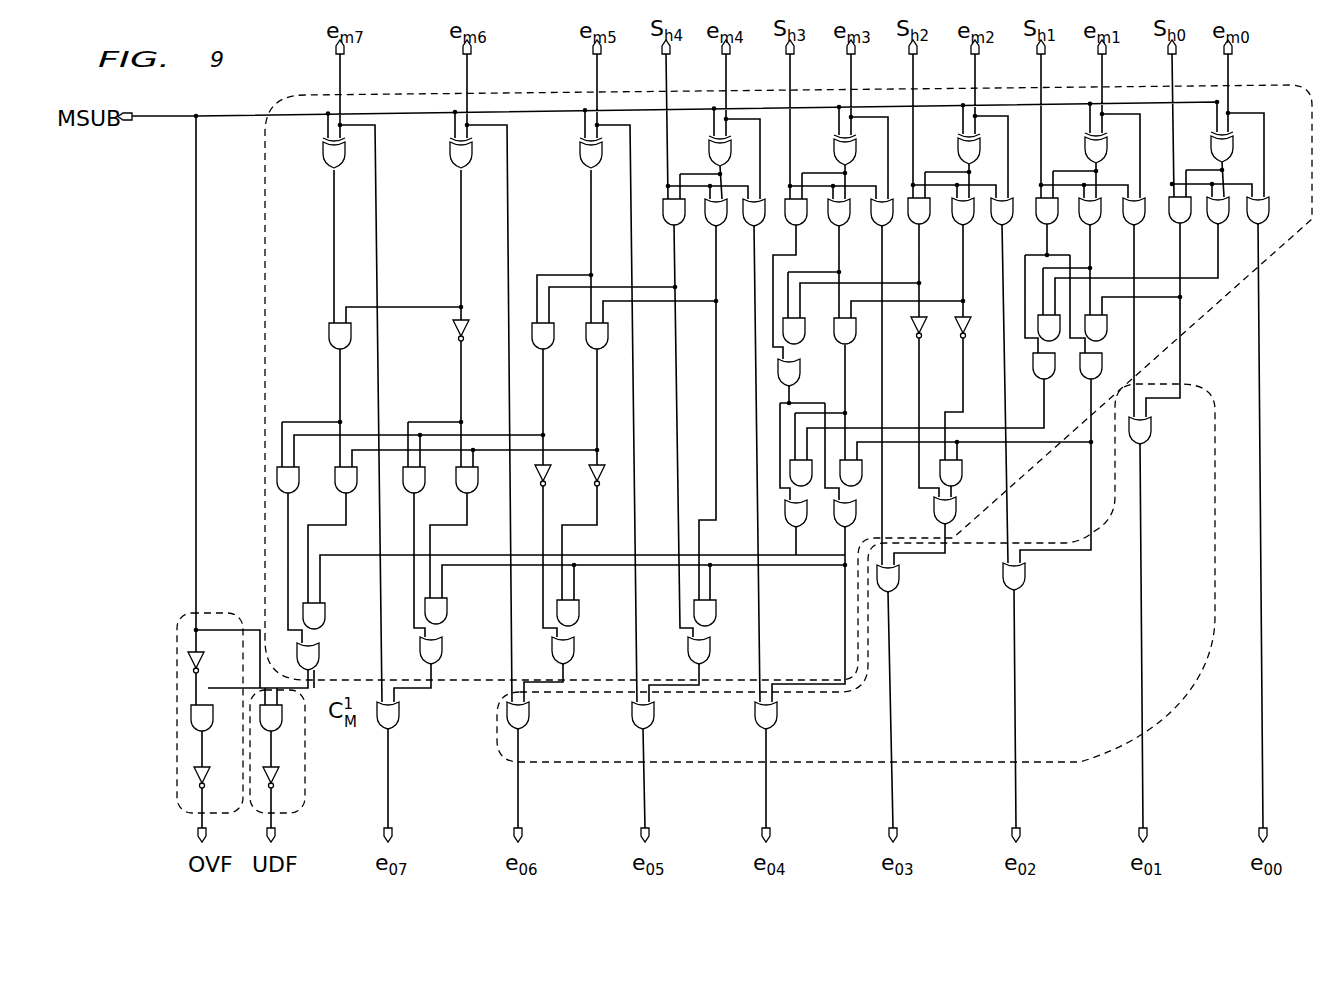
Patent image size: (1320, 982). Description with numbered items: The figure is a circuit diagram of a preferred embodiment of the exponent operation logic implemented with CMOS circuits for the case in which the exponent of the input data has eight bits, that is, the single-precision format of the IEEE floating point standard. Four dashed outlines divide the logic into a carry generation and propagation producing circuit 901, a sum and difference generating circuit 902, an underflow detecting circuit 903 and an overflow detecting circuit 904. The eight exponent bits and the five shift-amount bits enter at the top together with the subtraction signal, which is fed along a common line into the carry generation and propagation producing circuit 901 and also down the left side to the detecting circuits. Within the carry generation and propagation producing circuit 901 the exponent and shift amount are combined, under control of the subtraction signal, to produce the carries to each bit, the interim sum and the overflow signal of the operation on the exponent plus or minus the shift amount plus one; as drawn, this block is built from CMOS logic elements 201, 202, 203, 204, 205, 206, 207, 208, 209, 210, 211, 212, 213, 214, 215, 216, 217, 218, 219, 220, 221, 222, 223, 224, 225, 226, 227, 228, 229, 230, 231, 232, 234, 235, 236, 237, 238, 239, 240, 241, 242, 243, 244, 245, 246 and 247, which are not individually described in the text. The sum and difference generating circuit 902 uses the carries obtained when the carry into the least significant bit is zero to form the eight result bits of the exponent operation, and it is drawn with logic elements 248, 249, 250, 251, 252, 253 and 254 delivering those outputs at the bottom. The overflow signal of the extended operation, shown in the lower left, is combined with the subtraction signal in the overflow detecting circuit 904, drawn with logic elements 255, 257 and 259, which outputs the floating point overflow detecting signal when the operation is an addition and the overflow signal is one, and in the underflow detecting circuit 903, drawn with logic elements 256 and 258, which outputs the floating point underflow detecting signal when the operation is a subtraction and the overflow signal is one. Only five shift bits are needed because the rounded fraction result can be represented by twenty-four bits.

The exclusive OR gate 201 is at (1213, 146).
The exclusive OR gate 202 is at (1086, 146).
The exclusive OR gate 203 is at (960, 150).
The exclusive OR gate 204 is at (836, 150).
The exclusive OR gate 205 is at (710, 150).
The exclusive OR gate 206 is at (582, 180).
The exclusive OR gate 207 is at (452, 180).
The exclusive OR gate 208 is at (325, 180).
The gate 209 is at (1270, 204).
The gate 210 is at (1222, 227).
The gate 211 is at (1186, 226).
The gate 212 is at (1138, 227).
The gate 213 is at (1097, 226).
The gate 214 is at (1056, 226).
The gate 215 is at (1010, 226).
The gate 216 is at (971, 229).
The gate 217 is at (928, 226).
The gate 218 is at (888, 230).
The gate 219 is at (848, 226).
The gate 220 is at (804, 230).
The gate 221 is at (762, 226).
The gate 222 is at (722, 229).
The gate 223 is at (680, 226).
The inverter 224 is at (960, 334).
The inverter 225 is at (915, 329).
The gate 226 is at (834, 330).
The gate 227 is at (800, 380).
The gate 228 is at (608, 344).
The gate 229 is at (550, 349).
The inverter 230 is at (457, 341).
The gate 231 is at (338, 349).
The inverter 232 is at (602, 490).
The inverter 234 is at (551, 490).
The gate 235 is at (480, 494).
The gate 236 is at (422, 492).
The gate 237 is at (354, 494).
The gate 238 is at (299, 492).
The gate 239 is at (1054, 378).
The gate 240 is at (790, 524).
The gate 241 is at (319, 660).
The gate 242 is at (1103, 362).
The gate 243 is at (953, 511).
The gate 244 is at (840, 526).
The gate 245 is at (709, 658).
The gate 246 is at (574, 658).
The gate 247 is at (442, 660).
The gate 248 is at (1139, 442).
The gate 249 is at (1024, 582).
The gate 250 is at (898, 587).
The gate 251 is at (774, 726).
The gate 252 is at (655, 726).
The gate 253 is at (529, 726).
The gate 254 is at (396, 728).
The inverter 255 is at (204, 658).
The gate 256 is at (280, 728).
The gate 257 is at (214, 728).
The inverter 258 is at (281, 774).
The inverter 259 is at (194, 774).
The carry generation and propagation producing circuit 901 is at (265, 250).
The sum and difference generating circuit 902 is at (1175, 702).
The underflow detecting circuit 903 is at (290, 812).
The overflow detecting circuit 904 is at (177, 644).